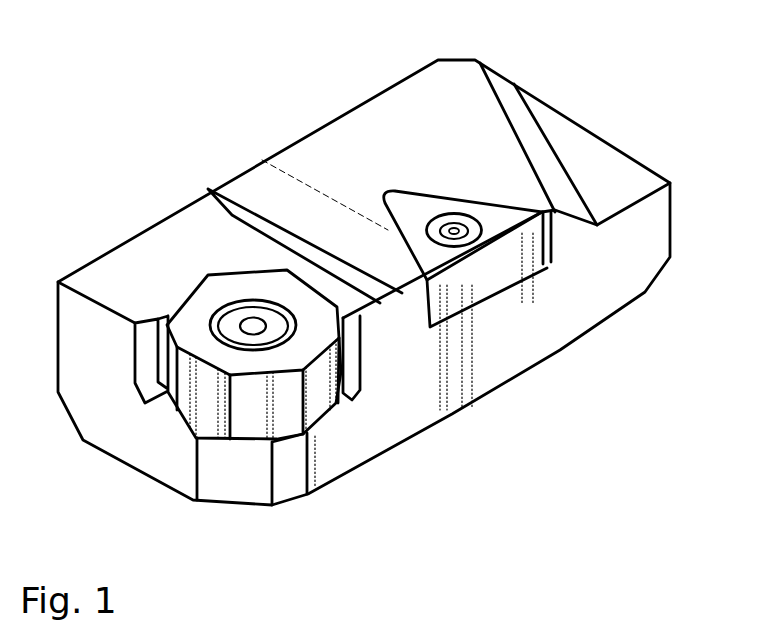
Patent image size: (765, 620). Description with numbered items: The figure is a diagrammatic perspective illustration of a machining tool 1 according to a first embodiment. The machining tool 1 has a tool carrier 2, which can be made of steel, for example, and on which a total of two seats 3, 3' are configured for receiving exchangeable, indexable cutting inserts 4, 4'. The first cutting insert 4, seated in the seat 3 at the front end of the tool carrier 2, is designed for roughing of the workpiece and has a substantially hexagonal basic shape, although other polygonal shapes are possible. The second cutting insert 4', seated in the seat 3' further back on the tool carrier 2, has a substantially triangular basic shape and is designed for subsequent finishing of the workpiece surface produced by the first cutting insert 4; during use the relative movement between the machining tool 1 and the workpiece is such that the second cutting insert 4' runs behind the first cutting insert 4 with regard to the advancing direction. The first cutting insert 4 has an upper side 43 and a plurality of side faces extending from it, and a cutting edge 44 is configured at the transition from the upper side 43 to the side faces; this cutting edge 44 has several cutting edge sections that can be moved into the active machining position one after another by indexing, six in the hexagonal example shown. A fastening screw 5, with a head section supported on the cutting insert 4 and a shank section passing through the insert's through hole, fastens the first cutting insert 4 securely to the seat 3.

The machining tool 1 is at (224, 113).
The tool carrier 2 is at (335, 147).
The seat 3 is at (205, 334).
The seat 3' is at (564, 206).
The first cutting insert 4 is at (194, 293).
The second cutting insert 4' is at (465, 313).
The upper side 43 is at (221, 286).
The cutting edge 44 is at (176, 346).
The fastening screw 5 is at (250, 313).